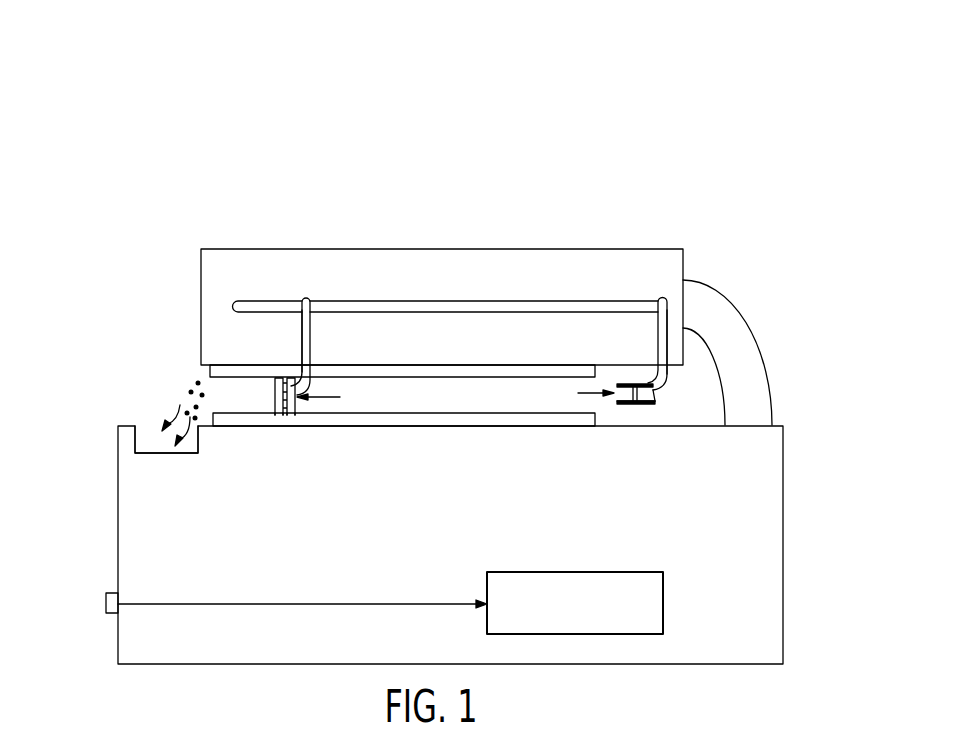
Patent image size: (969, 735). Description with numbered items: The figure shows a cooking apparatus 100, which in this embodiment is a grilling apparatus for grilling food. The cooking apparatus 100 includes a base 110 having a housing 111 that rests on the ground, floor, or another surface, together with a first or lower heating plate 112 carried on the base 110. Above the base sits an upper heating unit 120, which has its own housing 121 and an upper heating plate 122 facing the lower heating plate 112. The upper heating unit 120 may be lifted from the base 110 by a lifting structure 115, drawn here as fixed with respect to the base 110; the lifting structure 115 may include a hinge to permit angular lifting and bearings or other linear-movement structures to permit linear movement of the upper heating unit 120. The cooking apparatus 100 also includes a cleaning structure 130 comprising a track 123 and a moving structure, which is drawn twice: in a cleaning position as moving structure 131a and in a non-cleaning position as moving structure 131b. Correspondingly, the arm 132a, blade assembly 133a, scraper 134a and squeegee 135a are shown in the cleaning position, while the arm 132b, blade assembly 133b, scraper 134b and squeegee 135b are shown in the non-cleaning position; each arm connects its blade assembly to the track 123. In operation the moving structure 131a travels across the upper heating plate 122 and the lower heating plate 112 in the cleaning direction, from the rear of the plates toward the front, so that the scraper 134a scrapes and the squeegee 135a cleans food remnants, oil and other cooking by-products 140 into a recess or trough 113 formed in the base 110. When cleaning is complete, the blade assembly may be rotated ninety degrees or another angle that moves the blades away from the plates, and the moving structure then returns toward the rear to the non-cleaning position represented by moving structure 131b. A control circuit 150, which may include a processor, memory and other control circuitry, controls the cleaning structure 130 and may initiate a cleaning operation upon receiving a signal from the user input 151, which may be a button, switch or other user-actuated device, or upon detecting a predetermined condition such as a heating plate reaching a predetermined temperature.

The cooking apparatus 100 is at (560, 65).
The base 110 is at (80, 555).
The housing 111 is at (773, 552).
The first heating plate 112 is at (437, 424).
The recess or trough 113 is at (160, 455).
The lifting structure 115 is at (753, 367).
The upper heating unit 120 is at (152, 262).
The housing 121 is at (237, 260).
The upper heating plate 122 is at (393, 365).
The track 123 is at (258, 302).
The cleaning structure 130 is at (485, 271).
The moving structure in cleaning position 131a is at (322, 330).
The moving structure in non-cleaning position 131b is at (638, 324).
The arm in cleaning position 132a is at (301, 330).
The arm in non-cleaning position 132b is at (662, 328).
The blade assembly in cleaning position 133a is at (265, 422).
The blade assembly in non-cleaning position 133b is at (672, 408).
The scraper in cleaning position 134a is at (275, 386).
The scraper in non-cleaning position 134b is at (622, 384).
The squeegee in cleaning position 135a is at (292, 417).
The squeegee in non-cleaning position 135b is at (638, 406).
The cooking by-products 140 is at (178, 372).
The control circuit 150 is at (567, 572).
The user input 151 is at (106, 602).